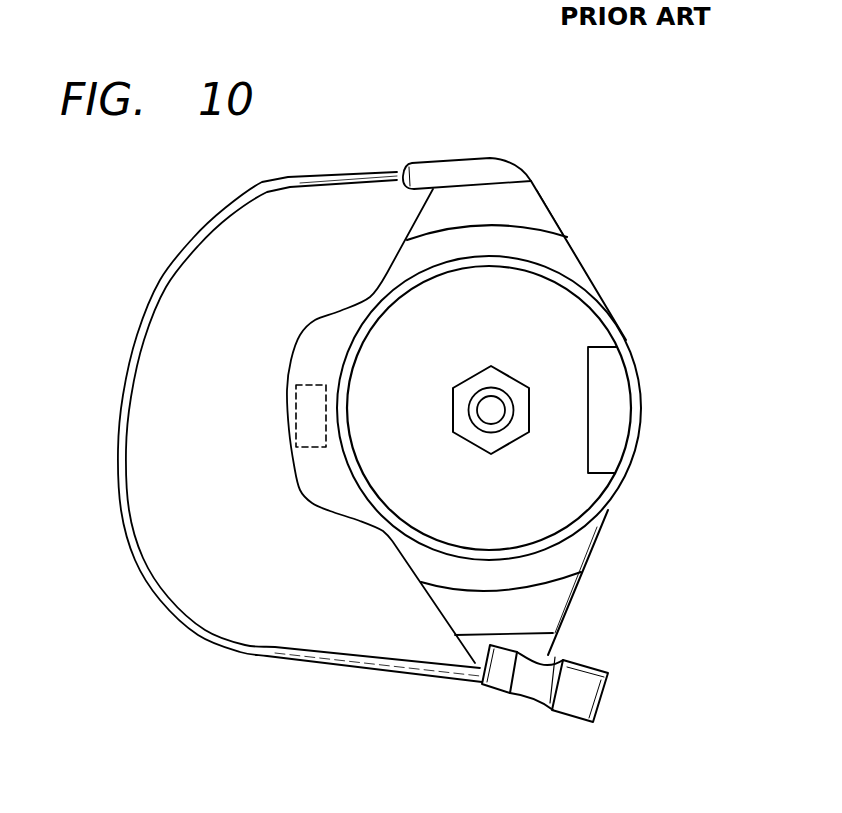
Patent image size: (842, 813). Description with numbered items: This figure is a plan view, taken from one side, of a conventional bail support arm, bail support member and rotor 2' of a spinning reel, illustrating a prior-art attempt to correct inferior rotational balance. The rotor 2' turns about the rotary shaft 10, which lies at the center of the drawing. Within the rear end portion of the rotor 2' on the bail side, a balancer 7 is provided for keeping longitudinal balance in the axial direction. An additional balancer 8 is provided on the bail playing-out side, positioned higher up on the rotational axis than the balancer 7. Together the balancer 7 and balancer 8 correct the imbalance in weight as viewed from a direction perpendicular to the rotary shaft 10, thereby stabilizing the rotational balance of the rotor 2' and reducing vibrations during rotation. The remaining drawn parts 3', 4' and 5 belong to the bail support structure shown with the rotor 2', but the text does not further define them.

The rotor 2' is at (498, 422).
The strap clasp 3' is at (592, 649).
The strap cap 4' is at (514, 158).
The protective shell 5 is at (193, 238).
The balancer 7 is at (300, 420).
The balancer 8 is at (610, 417).
The rotary shaft 10 is at (503, 392).